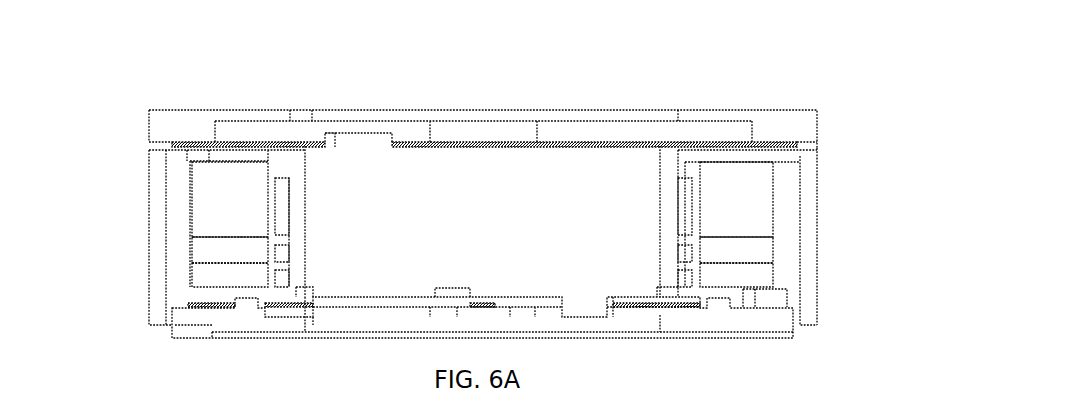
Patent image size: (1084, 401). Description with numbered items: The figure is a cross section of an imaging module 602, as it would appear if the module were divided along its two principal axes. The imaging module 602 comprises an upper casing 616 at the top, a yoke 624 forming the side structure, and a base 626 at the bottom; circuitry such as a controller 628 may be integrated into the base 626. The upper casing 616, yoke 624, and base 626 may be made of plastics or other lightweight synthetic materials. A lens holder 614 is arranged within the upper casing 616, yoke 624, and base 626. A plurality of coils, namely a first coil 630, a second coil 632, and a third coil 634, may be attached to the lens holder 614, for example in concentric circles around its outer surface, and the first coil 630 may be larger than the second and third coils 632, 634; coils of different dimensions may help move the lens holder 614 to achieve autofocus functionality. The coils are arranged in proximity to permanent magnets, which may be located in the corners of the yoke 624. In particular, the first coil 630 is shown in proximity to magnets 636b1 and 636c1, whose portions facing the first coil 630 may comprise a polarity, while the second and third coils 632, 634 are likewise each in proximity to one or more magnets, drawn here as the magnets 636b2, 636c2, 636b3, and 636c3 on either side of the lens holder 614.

The imaging module 602 is at (840, 78).
The lens holder 614 is at (298, 157).
The upper casing 616 is at (295, 110).
The yoke 624 is at (153, 242).
The base 626 is at (777, 326).
The controller 628 is at (740, 337).
The first coil 630 is at (683, 208).
The second coil 632 is at (683, 253).
The third coil 634 is at (683, 282).
The magnet 636b1 is at (767, 198).
The second right contact pad 636b2 is at (767, 248).
The third right contact pad 636b3 is at (770, 282).
The magnet 636c1 is at (252, 217).
The second left contact pad 636c2 is at (252, 260).
The third left contact pad 636c3 is at (252, 285).